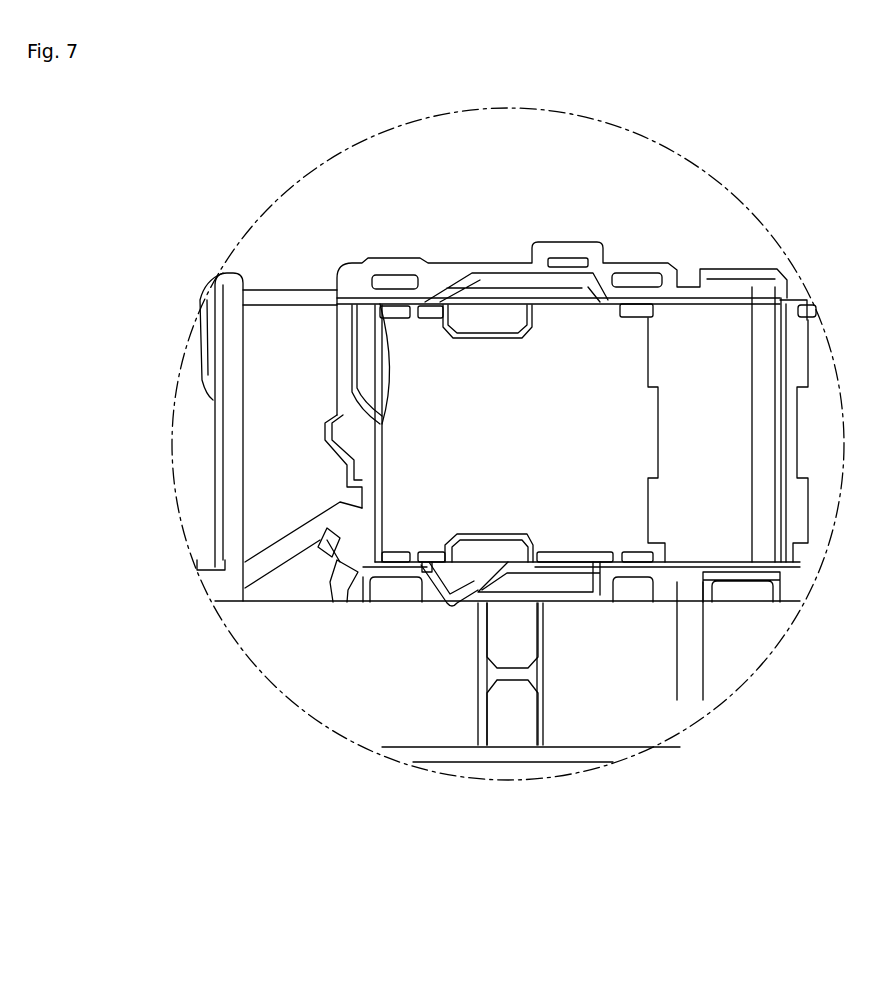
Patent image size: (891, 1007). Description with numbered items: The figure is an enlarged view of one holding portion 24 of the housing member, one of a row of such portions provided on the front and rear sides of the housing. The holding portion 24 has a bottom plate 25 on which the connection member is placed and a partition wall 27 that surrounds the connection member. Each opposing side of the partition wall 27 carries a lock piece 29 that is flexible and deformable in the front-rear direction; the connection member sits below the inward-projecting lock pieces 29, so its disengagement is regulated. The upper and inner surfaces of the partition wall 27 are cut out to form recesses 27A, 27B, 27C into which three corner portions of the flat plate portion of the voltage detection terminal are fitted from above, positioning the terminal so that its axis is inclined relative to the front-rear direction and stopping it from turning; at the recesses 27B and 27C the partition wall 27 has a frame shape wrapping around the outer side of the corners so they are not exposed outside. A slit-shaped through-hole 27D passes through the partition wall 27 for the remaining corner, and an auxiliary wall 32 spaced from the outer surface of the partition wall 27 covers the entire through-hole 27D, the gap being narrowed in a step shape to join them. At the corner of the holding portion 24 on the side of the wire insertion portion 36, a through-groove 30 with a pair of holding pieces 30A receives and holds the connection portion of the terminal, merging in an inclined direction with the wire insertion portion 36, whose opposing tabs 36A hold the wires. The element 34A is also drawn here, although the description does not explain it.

The holding portion 24 is at (680, 204).
The bottom plate 25 is at (722, 387).
The partition wall 27 is at (447, 263).
The recess 27A is at (560, 300).
The recess 27B is at (348, 428).
The recess 27C is at (457, 578).
The through-hole 27D is at (577, 289).
The lock piece 29 is at (403, 308).
The through-groove 30 is at (293, 585).
The holding piece 30A is at (312, 533).
The auxiliary wall 32 is at (563, 242).
The curved arm 34A is at (393, 378).
The wire insertion portion 36 is at (760, 633).
The tab 36A is at (510, 650).